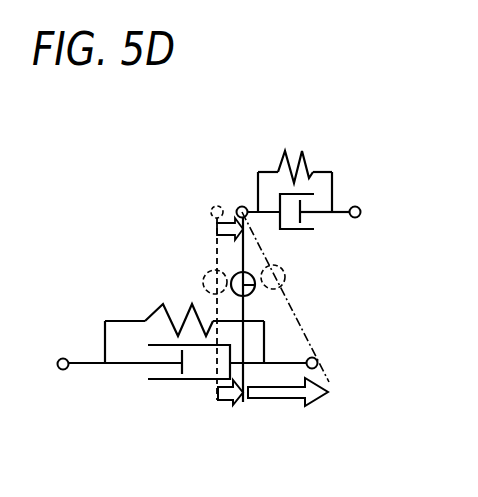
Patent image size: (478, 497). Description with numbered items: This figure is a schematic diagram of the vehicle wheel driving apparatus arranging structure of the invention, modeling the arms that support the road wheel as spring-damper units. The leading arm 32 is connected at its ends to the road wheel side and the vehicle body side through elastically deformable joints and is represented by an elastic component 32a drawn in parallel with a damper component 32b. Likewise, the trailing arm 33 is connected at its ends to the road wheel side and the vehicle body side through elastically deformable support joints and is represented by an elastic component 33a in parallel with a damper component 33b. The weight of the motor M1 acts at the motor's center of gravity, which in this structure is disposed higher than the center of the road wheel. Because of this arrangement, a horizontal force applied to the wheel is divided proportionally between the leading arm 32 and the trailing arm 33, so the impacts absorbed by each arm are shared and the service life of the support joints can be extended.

The leading arm 32 is at (325, 164).
The elastic component 32a is at (290, 153).
The damper component 32b is at (307, 193).
The trailing arm 33 is at (171, 304).
The elastic component 33a is at (163, 305).
The damper component 33b is at (153, 344).
The weight of the motor M1 is at (255, 291).